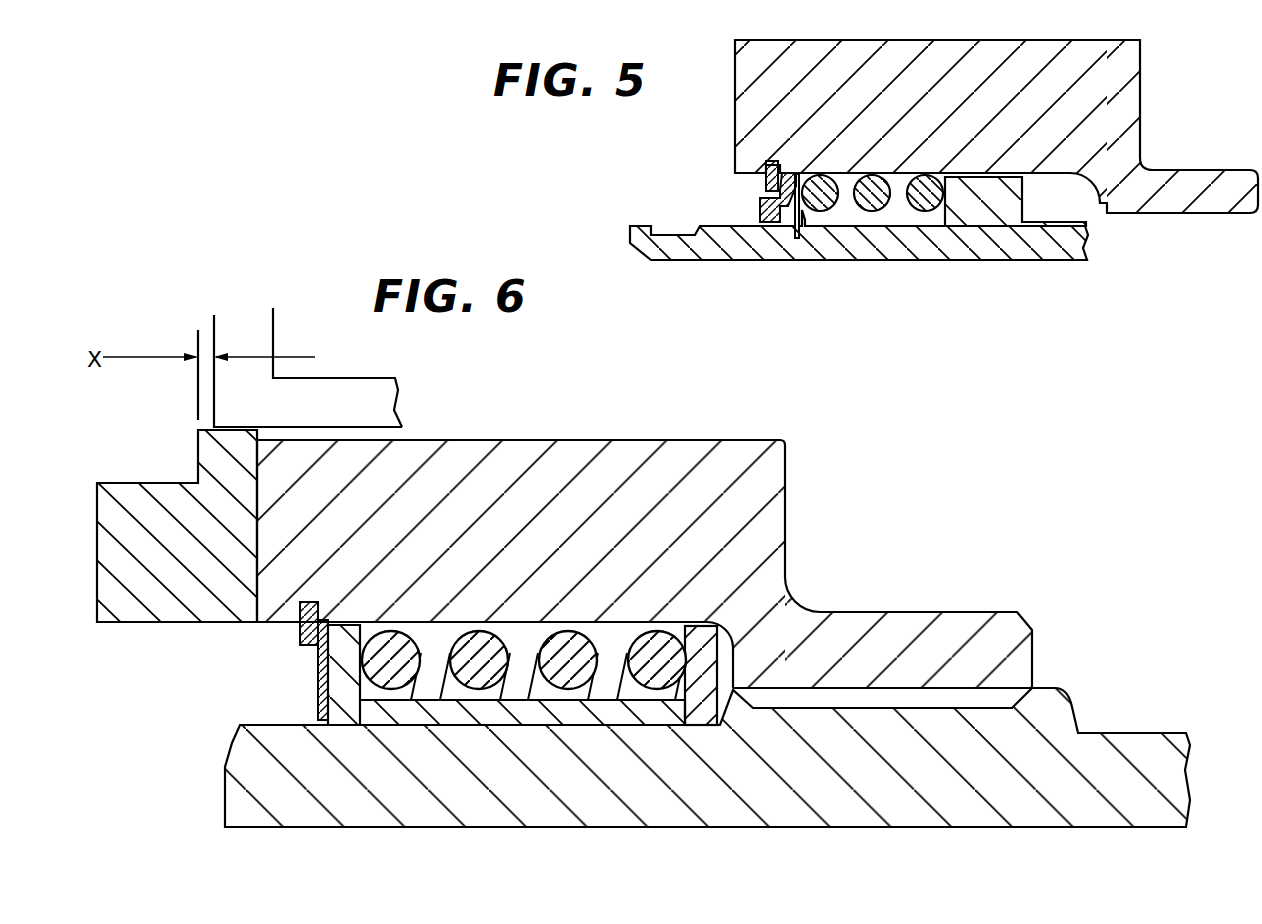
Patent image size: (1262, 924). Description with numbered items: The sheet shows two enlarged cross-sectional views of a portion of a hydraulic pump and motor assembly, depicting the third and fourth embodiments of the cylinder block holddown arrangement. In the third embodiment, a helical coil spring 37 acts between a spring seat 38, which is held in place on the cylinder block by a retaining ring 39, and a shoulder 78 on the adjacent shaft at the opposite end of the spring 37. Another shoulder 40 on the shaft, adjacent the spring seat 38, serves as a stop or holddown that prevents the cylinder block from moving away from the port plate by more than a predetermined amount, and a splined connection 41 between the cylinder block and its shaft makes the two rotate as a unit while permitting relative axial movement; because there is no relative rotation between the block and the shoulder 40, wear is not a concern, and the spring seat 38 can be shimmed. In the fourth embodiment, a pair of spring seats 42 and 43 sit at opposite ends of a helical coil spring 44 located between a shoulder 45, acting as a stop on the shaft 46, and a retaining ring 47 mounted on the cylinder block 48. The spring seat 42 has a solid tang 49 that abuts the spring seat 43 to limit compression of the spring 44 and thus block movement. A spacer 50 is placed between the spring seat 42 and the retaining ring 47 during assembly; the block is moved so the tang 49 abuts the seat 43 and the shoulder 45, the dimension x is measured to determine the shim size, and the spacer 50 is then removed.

In FIG. 5, the helical coil spring 37 is at (926, 206).
In FIG. 5, the spring seat 38 is at (762, 200).
In FIG. 5, the retaining ring 39 is at (768, 168).
In FIG. 5, the shoulder 40 is at (793, 235).
In FIG. 5, the splined connection 41 is at (1182, 214).
In FIG. 6, the splined connection 41 is at (990, 697).
In FIG. 5, the shoulder 78 is at (996, 208).
In FIG. 6, the spring seat 42 is at (342, 700).
In FIG. 6, the spring seat 43 is at (790, 572).
In FIG. 6, the helical coil spring 44 is at (548, 650).
In FIG. 6, the shoulder 45 is at (754, 677).
In FIG. 6, the shaft 46 is at (1097, 753).
In FIG. 6, the retaining ring 47 is at (298, 633).
In FIG. 6, the cylinder block 48 is at (758, 487).
In FIG. 6, the solid tang 49 is at (477, 713).
In FIG. 6, the spacer 50 is at (312, 689).